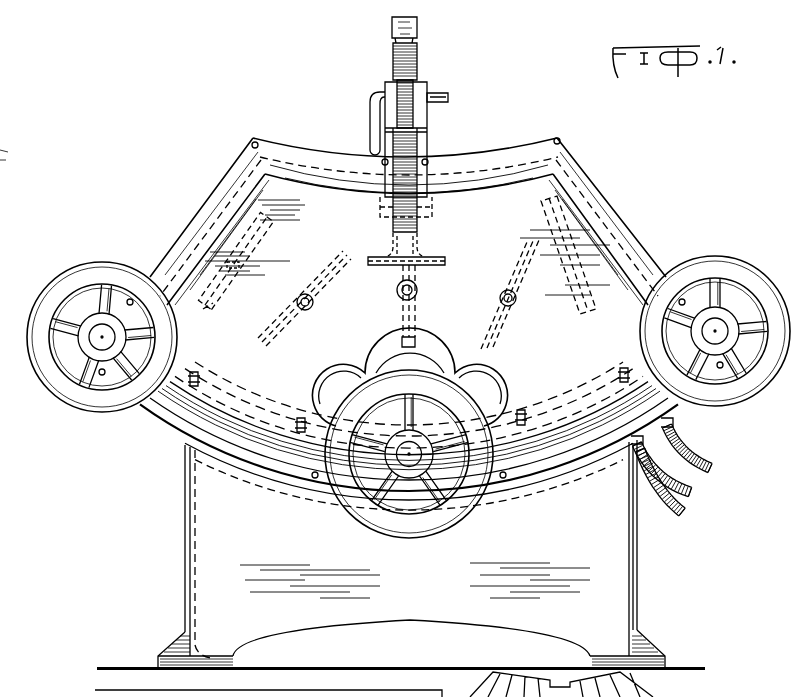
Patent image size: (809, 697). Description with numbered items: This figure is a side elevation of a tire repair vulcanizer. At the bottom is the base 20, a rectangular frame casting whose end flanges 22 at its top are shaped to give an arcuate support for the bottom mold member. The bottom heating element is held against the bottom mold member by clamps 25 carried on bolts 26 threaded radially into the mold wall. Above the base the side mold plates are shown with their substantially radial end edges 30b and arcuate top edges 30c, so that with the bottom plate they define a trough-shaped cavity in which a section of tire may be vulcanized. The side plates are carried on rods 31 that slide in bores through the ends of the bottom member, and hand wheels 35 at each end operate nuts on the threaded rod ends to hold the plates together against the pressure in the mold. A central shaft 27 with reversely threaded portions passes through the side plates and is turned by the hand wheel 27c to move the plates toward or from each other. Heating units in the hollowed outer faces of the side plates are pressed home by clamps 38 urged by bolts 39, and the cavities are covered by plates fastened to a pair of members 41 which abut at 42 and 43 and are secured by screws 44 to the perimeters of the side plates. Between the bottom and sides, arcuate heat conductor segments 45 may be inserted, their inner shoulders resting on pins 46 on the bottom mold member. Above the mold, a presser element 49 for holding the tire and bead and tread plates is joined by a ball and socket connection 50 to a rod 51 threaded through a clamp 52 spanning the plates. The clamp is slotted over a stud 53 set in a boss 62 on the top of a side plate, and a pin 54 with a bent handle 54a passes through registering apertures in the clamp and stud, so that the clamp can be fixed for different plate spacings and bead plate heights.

The base 20 is at (620, 577).
The end flanges 22 is at (228, 470).
The clamps 25 is at (409, 426).
The bolts 26 is at (190, 385).
The shaft 27 is at (397, 453).
The hand wheel 27c is at (362, 520).
The end edges 30b is at (222, 190).
The top edges 30c is at (480, 151).
The rods 31 is at (104, 330).
The hand wheels 35 is at (86, 262).
The clamps 38 is at (225, 300).
The bolts 39 is at (396, 291).
The members 41 is at (580, 167).
The abutment 42 is at (383, 196).
The abutment 43 is at (417, 347).
The screws 44 is at (381, 161).
The heat conductor segments 45 is at (409, 333).
The pins 46 is at (283, 478).
The presser element 49 is at (446, 261).
The ball and socket connection 50 is at (392, 243).
The rod 51 is at (418, 62).
The clamp member 52 is at (430, 118).
The stud 53 is at (413, 84).
The pin 54 is at (448, 97).
The handle 54a is at (369, 115).
The boss 62 is at (433, 208).